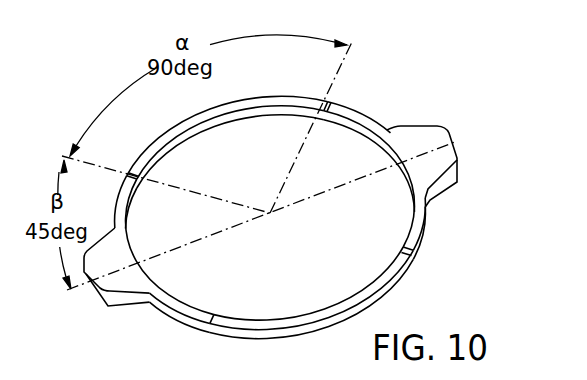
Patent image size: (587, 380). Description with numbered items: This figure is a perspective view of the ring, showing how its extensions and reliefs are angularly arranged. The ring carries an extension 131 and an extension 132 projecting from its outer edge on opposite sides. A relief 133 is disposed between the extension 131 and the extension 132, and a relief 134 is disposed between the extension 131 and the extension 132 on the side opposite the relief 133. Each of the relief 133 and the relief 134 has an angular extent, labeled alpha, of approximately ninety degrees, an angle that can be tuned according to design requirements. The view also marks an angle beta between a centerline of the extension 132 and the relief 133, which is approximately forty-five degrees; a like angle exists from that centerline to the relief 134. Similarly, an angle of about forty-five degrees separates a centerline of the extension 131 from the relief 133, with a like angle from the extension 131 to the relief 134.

The extension 131 is at (423, 129).
The extension 132 is at (110, 300).
The relief 133 is at (177, 134).
The relief 134 is at (408, 267).